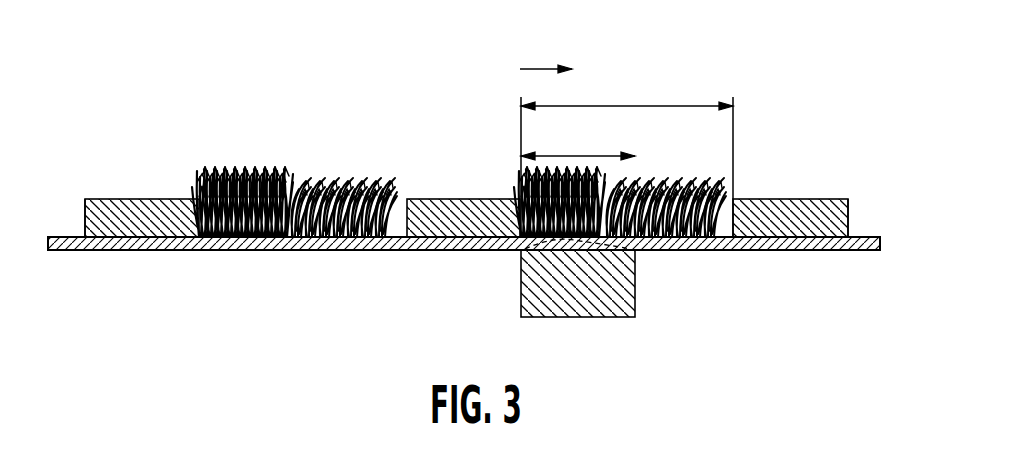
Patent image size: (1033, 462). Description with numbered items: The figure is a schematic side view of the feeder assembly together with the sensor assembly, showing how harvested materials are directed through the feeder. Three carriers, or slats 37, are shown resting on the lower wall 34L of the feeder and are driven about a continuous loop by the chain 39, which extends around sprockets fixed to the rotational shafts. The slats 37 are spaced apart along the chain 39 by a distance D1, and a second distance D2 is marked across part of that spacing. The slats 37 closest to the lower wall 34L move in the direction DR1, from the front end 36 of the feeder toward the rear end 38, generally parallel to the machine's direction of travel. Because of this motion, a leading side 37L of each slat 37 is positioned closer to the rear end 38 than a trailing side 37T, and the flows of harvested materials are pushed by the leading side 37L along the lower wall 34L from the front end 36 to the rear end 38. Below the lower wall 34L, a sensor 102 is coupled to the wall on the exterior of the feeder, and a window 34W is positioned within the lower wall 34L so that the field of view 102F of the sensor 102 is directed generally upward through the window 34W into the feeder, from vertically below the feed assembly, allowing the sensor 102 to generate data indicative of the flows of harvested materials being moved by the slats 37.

The front end of the feeder 36 is at (221, 147).
The rear end of the feeder 38 is at (848, 97).
The carriers (slats) 37 is at (150, 199).
The trailing side of the slats 37T is at (85, 220).
The leading side of the slats 37L is at (848, 220).
The chains 39 is at (395, 235).
The lower wall of the feeder 34L is at (430, 245).
The window 34W is at (521, 245).
The sensor 102 is at (521, 296).
The field of view of the sensor 102F is at (612, 251).
The distance between slats D1 is at (614, 105).
The second distance D2 is at (558, 156).
The direction of slat movement DR1 is at (545, 68).